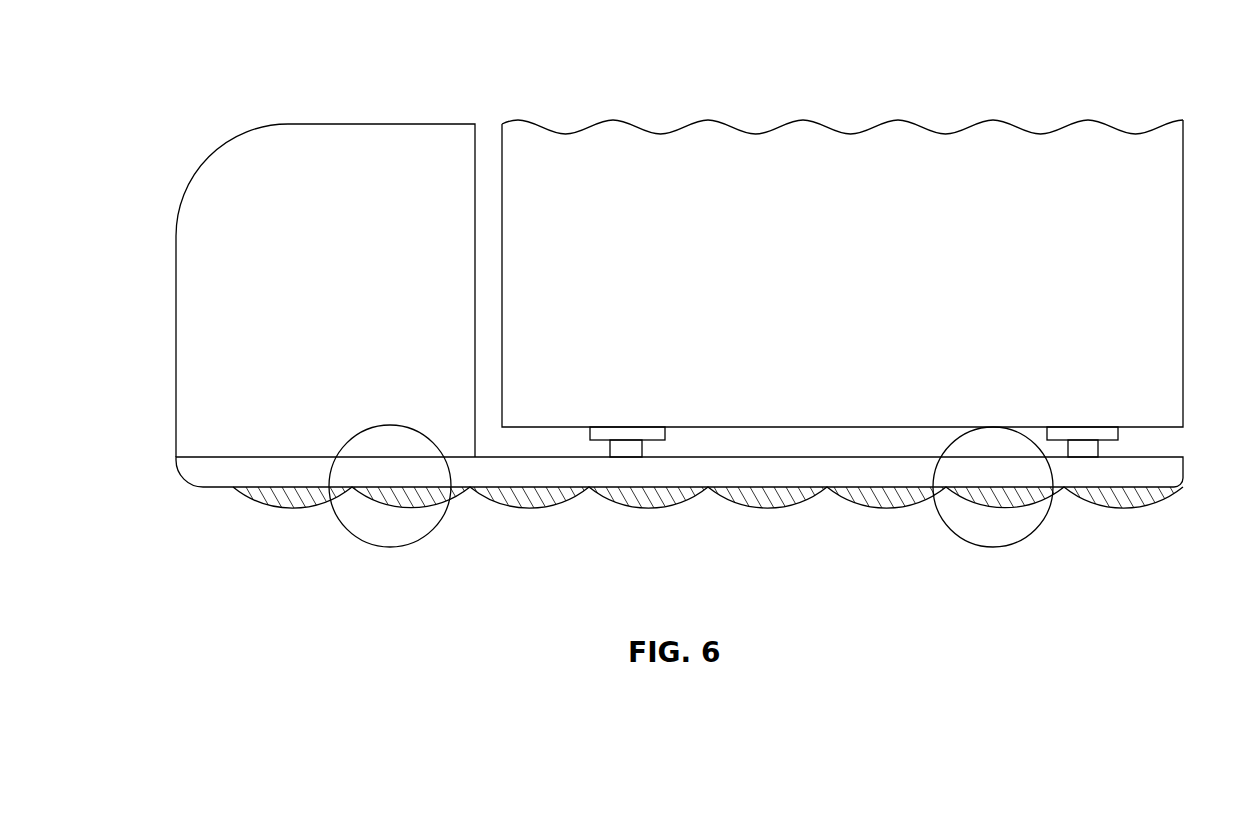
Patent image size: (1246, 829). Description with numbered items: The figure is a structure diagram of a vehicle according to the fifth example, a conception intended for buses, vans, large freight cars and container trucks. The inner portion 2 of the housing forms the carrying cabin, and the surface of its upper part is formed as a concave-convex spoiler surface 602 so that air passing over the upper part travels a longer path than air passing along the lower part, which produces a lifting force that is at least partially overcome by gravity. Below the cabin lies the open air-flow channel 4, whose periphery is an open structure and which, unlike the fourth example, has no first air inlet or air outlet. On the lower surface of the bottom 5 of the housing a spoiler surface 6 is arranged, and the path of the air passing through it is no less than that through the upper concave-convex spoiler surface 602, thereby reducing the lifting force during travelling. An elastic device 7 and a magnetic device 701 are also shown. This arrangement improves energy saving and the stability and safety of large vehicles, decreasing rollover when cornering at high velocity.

The inner portion of housing 2 is at (842, 232).
The concave-convex spoiler surface 602 is at (643, 120).
The open air-flow channel 4 is at (773, 450).
The bottom of housing 5 is at (828, 487).
The spoiler surface 6 is at (708, 273).
The elastic device 7 is at (908, 247).
The magnetic device 701 is at (1065, 425).